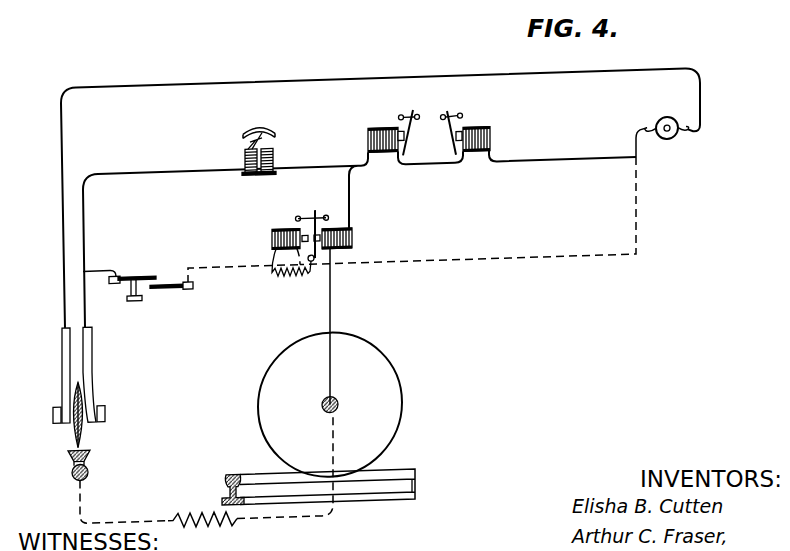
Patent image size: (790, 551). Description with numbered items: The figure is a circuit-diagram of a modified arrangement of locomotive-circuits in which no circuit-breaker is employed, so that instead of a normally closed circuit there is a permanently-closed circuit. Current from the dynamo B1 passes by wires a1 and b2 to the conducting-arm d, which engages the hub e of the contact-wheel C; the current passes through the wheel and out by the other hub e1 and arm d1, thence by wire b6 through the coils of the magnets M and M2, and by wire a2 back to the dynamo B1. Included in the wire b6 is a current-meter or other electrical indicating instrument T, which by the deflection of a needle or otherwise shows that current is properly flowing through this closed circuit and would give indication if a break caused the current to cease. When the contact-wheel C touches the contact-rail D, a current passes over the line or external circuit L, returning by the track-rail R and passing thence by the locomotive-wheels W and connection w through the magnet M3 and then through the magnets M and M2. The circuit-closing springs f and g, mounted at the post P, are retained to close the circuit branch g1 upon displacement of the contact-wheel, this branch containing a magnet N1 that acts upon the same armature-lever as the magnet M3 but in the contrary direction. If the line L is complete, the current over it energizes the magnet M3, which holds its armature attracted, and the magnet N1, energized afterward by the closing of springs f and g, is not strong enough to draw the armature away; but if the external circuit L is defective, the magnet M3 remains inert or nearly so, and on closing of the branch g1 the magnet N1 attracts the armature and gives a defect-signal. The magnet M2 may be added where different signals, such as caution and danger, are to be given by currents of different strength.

The wire b2 is at (74, 207).
The wire a1 is at (388, 98).
The dynamo B1 is at (662, 122).
The wire b6 is at (220, 232).
The wire a2 is at (497, 152).
The current-meter T is at (270, 145).
The magnet M is at (394, 128).
The magnet M2 is at (474, 126).
The magnet N1 is at (262, 232).
The magnet M3 is at (341, 235).
The circuit branch g1 is at (412, 219).
The contact-spring f is at (119, 270).
The pivot post P is at (134, 305).
The circuit-closing spring g is at (171, 293).
The connecting-arm d is at (55, 376).
The arm d1 is at (103, 374).
The hub e is at (48, 415).
The hub e1 is at (112, 412).
The contact-wheel C is at (86, 440).
The contact-rail D is at (74, 468).
The connection w is at (342, 326).
The locomotive-wheels W is at (401, 412).
The line L is at (206, 472).
The track-rail R is at (318, 498).